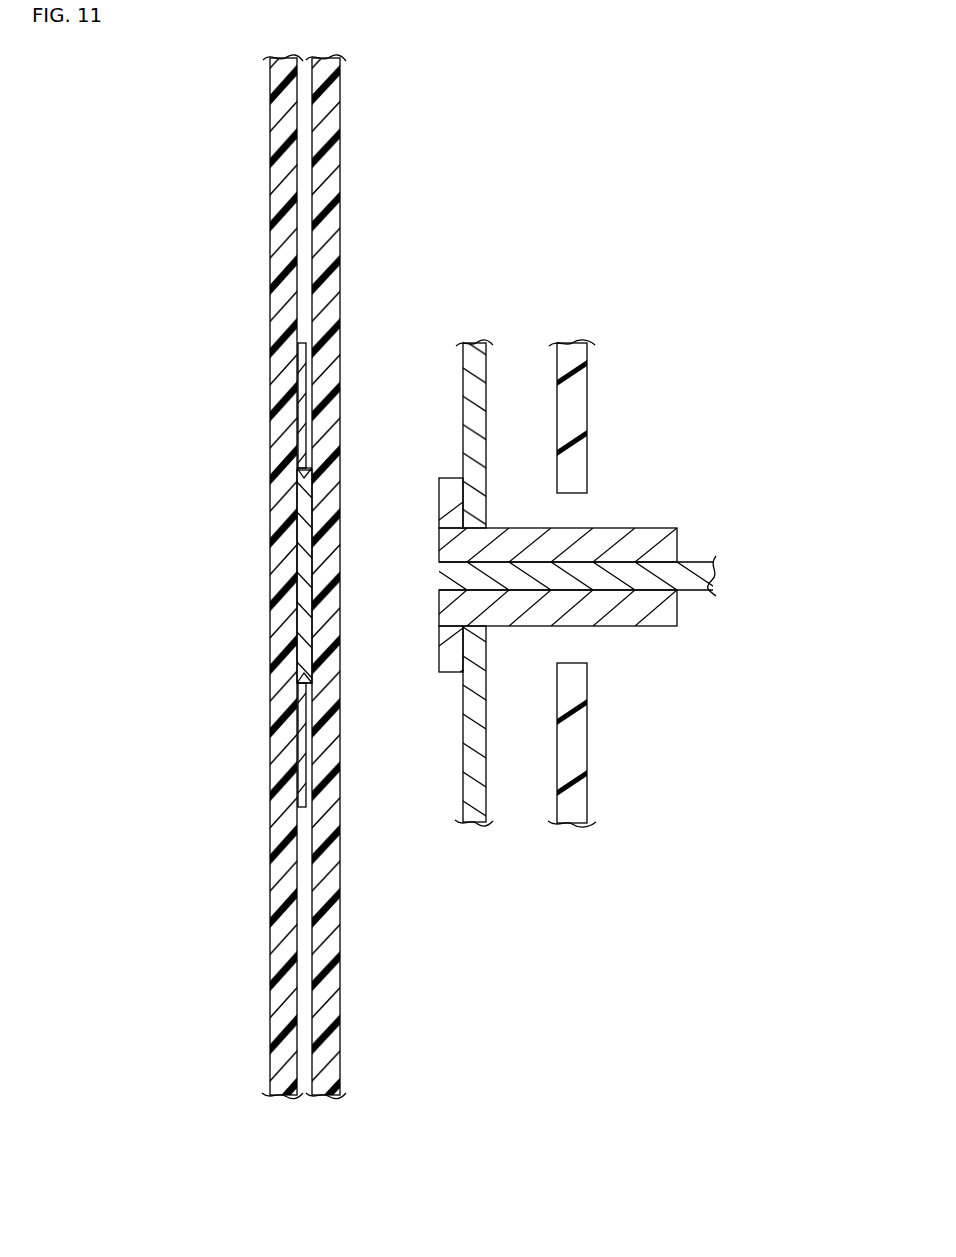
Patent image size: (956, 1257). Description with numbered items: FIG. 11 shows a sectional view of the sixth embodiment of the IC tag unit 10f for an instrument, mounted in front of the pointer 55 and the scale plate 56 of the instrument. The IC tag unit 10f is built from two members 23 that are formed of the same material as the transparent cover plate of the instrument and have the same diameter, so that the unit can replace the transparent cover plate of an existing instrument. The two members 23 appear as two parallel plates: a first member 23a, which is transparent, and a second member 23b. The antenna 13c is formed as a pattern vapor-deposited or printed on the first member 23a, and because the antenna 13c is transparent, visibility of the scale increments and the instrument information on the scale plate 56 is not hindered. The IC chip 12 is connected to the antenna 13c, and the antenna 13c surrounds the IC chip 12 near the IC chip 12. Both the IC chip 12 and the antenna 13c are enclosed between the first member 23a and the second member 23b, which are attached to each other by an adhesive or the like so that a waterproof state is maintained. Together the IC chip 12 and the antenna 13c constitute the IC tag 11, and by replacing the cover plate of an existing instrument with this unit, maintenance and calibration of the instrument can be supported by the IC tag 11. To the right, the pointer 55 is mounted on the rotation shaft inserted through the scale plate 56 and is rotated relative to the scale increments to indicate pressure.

The IC tag unit for an instrument 10f is at (324, 577).
The IC tag 11 is at (182, 575).
The IC chip 12 is at (270, 530).
The antenna 13c is at (270, 418).
The members 23 is at (393, 577).
The first member 23a is at (298, 150).
The second member 23b is at (340, 93).
The pointer 55 is at (470, 342).
The scale plate 56 is at (590, 413).